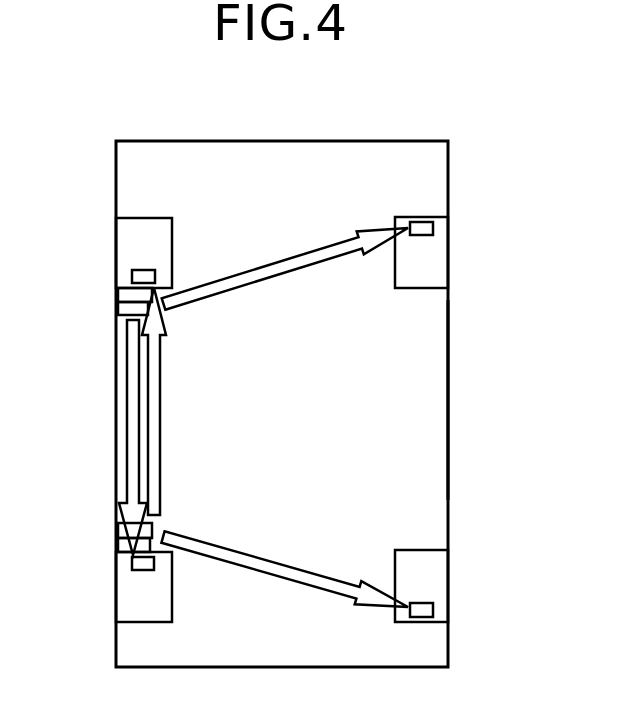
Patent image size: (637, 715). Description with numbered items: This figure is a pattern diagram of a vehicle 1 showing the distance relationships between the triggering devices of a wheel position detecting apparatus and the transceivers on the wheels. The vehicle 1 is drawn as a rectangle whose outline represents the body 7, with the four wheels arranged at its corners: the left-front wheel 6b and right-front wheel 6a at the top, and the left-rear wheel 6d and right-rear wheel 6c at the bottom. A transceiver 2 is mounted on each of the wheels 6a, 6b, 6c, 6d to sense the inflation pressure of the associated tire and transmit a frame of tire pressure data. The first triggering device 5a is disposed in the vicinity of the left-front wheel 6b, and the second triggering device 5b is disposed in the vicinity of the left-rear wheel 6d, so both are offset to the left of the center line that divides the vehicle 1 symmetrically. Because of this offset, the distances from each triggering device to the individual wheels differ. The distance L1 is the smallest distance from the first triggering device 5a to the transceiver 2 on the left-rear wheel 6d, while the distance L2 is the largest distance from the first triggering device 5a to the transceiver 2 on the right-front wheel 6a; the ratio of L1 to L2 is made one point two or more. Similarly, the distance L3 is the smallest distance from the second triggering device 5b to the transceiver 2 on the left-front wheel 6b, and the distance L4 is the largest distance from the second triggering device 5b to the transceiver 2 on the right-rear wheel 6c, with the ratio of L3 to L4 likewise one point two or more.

The vehicle 1 is at (352, 140).
The transceiver 2 is at (132, 276).
The first triggering device 5a is at (116, 307).
The second triggering device 5b is at (116, 528).
The right-front wheel 6a is at (449, 262).
The left-front wheel 6b is at (116, 237).
The right-rear wheel 6c is at (449, 572).
The left-rear wheel 6d is at (116, 601).
The body 7 is at (449, 390).
The distance L1 is at (113, 437).
The distance L2 is at (285, 269).
The distance L3 is at (167, 401).
The distance L4 is at (284, 569).